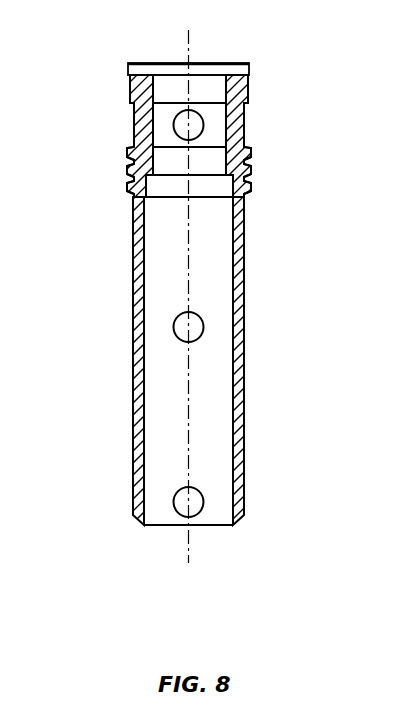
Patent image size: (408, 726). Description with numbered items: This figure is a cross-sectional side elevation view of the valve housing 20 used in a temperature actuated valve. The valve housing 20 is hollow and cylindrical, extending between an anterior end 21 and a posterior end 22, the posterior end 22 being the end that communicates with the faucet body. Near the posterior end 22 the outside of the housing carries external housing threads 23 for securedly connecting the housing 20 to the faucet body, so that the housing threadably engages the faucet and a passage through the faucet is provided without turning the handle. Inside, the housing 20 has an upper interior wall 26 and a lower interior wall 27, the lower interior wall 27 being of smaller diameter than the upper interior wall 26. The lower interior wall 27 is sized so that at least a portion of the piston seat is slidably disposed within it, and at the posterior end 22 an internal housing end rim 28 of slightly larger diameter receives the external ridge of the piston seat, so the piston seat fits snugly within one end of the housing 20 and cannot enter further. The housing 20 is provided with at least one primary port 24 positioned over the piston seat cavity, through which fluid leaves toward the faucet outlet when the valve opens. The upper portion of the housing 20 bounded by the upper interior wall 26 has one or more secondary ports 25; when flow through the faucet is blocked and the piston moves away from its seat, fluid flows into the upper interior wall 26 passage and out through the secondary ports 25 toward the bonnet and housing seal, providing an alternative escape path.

The valve housing 20 is at (83, 332).
The anterior end 21 is at (248, 505).
The posterior end 22 is at (204, 275).
The external housing threads 23 is at (130, 195).
The primary port 24 is at (204, 120).
The secondary ports 25 is at (203, 323).
The upper interior wall 26 is at (177, 411).
The lower interior wall 27 is at (163, 128).
The internal housing end rim 28 is at (130, 60).